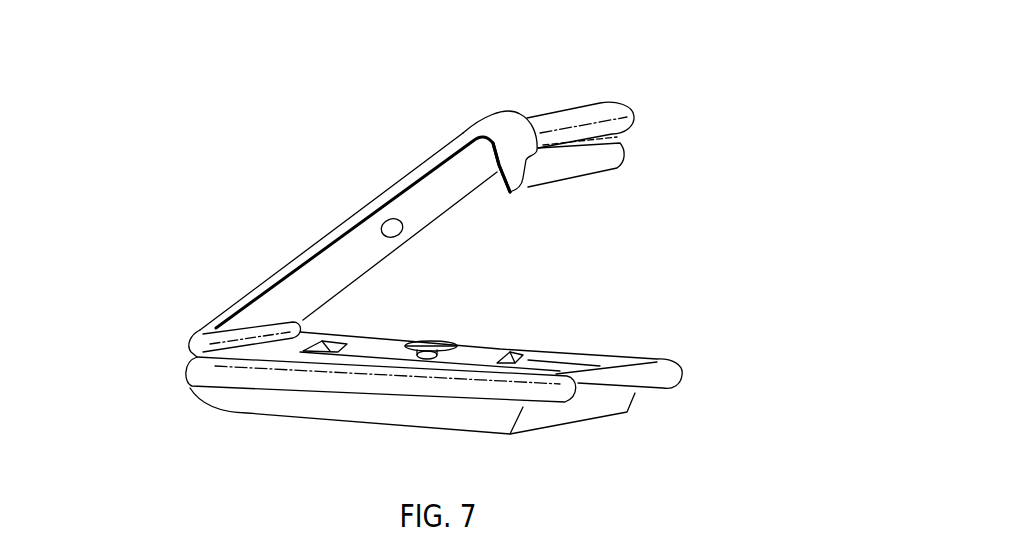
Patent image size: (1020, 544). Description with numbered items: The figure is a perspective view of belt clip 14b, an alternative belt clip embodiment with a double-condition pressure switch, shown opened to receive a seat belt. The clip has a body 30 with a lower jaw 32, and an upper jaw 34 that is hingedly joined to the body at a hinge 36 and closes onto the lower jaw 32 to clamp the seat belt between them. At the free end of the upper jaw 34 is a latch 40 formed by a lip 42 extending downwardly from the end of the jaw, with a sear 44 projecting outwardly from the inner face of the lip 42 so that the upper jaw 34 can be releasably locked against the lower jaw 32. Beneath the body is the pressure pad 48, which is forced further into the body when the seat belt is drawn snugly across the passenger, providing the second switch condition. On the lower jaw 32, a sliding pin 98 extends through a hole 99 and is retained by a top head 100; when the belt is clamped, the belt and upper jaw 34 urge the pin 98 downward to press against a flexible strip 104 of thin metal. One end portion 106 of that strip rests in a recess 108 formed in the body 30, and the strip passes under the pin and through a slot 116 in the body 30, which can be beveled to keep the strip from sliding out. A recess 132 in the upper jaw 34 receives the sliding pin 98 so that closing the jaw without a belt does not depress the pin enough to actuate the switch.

The belt clip 14b is at (705, 280).
The body 30 is at (227, 370).
The lower jaw 32 is at (587, 358).
The upper jaw 34 is at (327, 233).
The hinge 36 is at (192, 346).
The latch 40 is at (623, 120).
The lip 42 is at (511, 128).
The sear 44 is at (500, 167).
The pressure pad 48 is at (360, 416).
The sliding pin 98 is at (467, 343).
The hole 99 is at (427, 359).
The top head 100 is at (428, 341).
The flexible strip 104 is at (528, 360).
The end portion 106 is at (325, 342).
The recess 108 is at (357, 340).
The slot 116 is at (502, 352).
The recess 132 is at (388, 220).